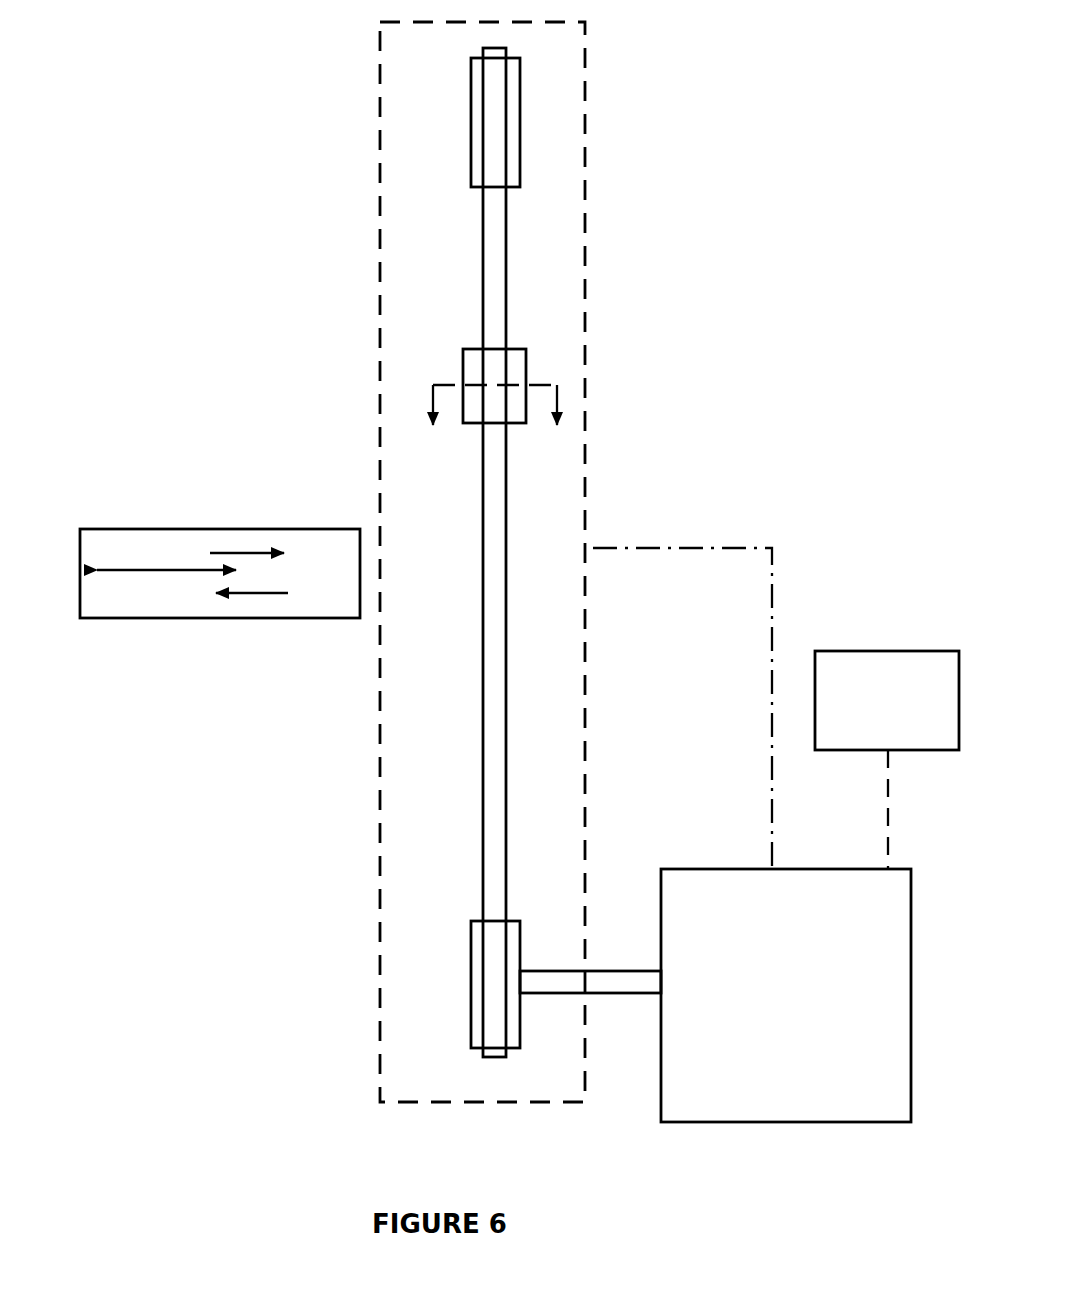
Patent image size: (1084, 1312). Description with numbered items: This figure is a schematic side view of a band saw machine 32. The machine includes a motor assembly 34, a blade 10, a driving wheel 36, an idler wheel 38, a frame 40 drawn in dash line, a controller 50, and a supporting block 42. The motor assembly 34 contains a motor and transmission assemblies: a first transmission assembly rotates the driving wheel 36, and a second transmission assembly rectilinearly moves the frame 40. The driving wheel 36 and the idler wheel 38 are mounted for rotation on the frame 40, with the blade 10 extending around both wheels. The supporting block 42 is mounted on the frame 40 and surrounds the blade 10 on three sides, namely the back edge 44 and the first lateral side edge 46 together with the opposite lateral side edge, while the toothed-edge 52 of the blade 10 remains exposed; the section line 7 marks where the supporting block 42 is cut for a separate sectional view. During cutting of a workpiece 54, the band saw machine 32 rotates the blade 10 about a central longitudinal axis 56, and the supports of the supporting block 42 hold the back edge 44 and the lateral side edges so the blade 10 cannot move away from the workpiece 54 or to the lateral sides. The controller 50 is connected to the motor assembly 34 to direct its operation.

The band saw machine 32 is at (172, 147).
The frame 40 is at (587, 70).
The blade 10 is at (494, 267).
The idler wheel 38 is at (478, 97).
The supporting block 42 is at (428, 341).
The section line 7- 7 is at (496, 421).
The toothed-edge 52 is at (483, 498).
The back edge 44 is at (506, 492).
The first lateral side edge 46 is at (492, 548).
The workpiece 54 is at (122, 537).
The central longitudinal axis 56 is at (175, 571).
The driving wheel 36 is at (476, 1006).
The motor assembly 34 is at (715, 835).
The controller 50 is at (887, 760).